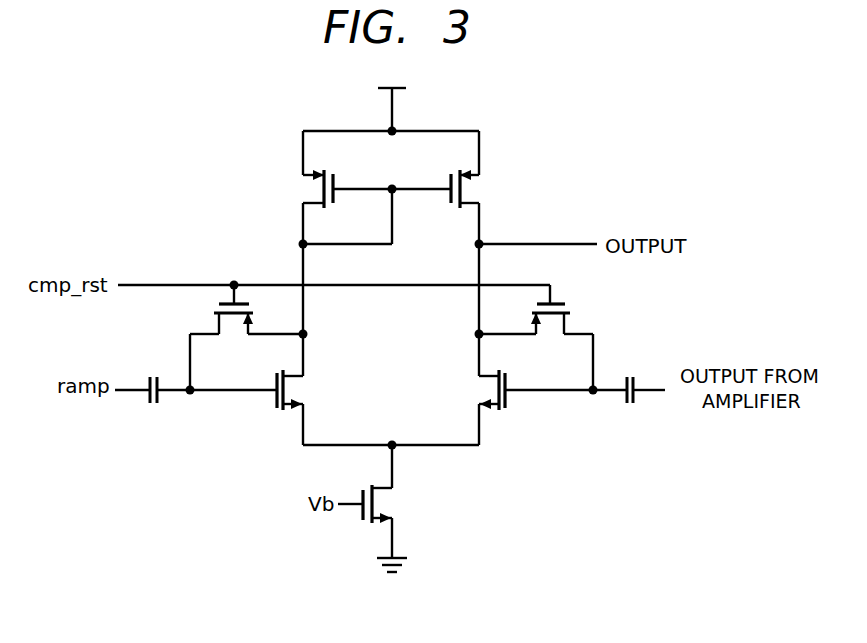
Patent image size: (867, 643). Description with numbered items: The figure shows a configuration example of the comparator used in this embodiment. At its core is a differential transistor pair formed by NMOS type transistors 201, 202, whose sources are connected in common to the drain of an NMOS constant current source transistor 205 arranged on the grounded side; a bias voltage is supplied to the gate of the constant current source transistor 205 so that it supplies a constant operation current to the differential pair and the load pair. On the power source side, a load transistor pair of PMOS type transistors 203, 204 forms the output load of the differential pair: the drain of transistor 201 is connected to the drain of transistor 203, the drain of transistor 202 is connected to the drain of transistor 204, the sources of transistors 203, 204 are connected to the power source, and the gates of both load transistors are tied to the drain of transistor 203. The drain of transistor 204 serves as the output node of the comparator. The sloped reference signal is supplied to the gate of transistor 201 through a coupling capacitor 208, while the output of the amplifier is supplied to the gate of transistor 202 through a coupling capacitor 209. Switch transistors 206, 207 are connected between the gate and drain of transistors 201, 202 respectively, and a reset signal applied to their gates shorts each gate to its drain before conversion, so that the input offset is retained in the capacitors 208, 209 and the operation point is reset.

The NMOS type transistor 201 is at (275, 409).
The NMOS type transistor 202 is at (505, 409).
The PMOS type transistor 203 is at (303, 186).
The PMOS type transistor 204 is at (480, 190).
The constant current source transistor 205 is at (393, 501).
The switch transistor 206 is at (208, 313).
The switch transistor 207 is at (575, 316).
The capacitor 208 is at (152, 408).
The capacitor 209 is at (630, 406).